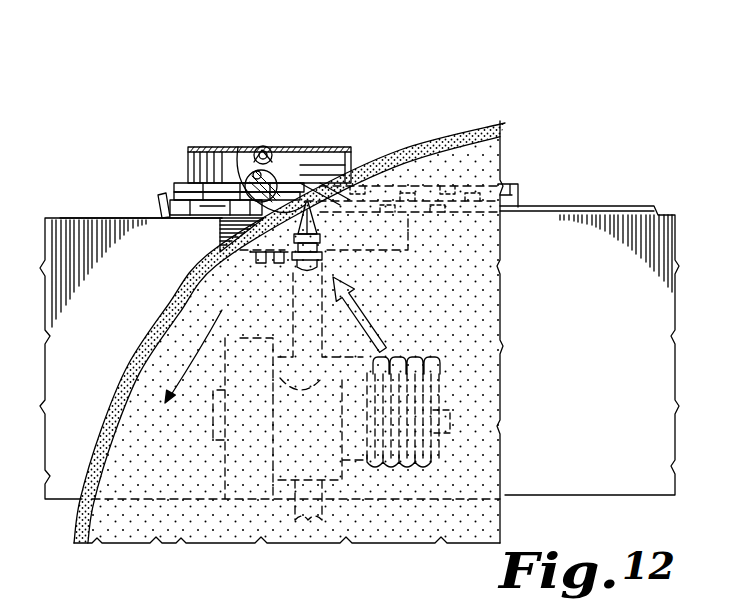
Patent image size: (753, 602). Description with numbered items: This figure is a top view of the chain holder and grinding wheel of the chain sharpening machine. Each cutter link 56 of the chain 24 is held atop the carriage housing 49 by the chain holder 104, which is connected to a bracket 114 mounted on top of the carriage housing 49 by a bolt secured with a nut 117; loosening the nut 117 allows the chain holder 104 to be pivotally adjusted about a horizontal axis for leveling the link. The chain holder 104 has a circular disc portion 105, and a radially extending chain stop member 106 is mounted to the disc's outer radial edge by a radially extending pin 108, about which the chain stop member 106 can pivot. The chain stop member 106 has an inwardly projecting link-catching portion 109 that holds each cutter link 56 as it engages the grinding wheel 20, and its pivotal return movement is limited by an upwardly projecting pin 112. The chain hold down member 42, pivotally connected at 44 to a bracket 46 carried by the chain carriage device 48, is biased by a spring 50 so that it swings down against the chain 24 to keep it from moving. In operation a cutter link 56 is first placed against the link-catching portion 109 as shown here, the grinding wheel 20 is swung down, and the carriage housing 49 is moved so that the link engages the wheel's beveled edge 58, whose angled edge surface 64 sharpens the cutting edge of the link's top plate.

The grinding wheel 20 is at (478, 246).
The chain 24 is at (178, 170).
The chain hold down member 42 is at (313, 273).
The pivotal connection 44 is at (383, 350).
The bracket 46 is at (258, 470).
The chain carriage device 48 is at (138, 214).
The carriage housing 49 is at (107, 243).
The spring 50 is at (440, 372).
The cutter link 56 is at (340, 150).
The grinding wheel edge 58 is at (432, 129).
The beveled edge surface 64 is at (481, 131).
The chain holder 104 is at (332, 128).
The circular disc portion 105 is at (228, 172).
The chain stop member 106 is at (283, 172).
The radially extending pin 108 is at (233, 162).
The link-catching portion 109 is at (310, 175).
The upwardly projecting pin 112 is at (255, 175).
The bracket 114 is at (213, 233).
The nut 117 is at (193, 275).